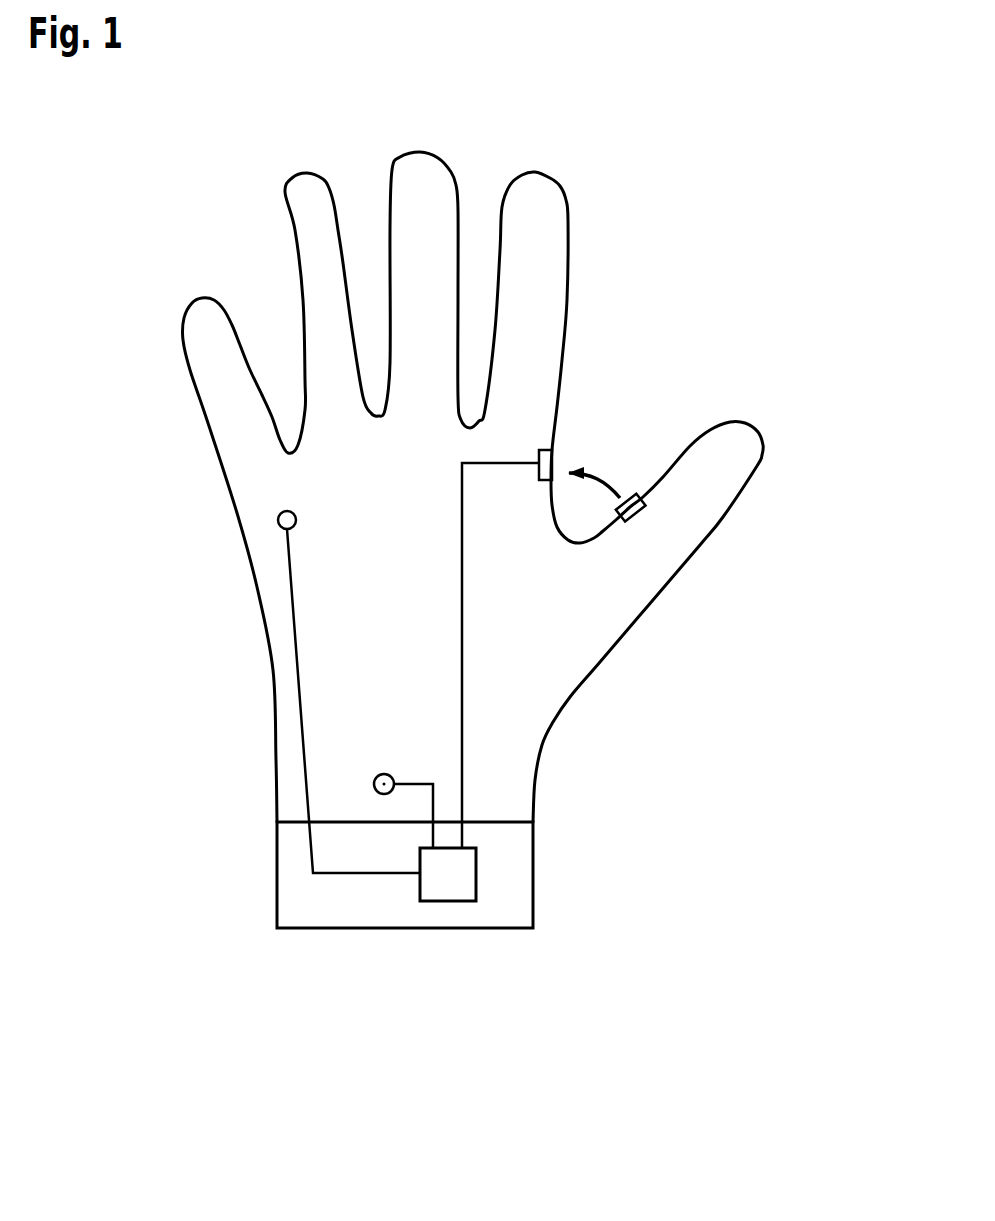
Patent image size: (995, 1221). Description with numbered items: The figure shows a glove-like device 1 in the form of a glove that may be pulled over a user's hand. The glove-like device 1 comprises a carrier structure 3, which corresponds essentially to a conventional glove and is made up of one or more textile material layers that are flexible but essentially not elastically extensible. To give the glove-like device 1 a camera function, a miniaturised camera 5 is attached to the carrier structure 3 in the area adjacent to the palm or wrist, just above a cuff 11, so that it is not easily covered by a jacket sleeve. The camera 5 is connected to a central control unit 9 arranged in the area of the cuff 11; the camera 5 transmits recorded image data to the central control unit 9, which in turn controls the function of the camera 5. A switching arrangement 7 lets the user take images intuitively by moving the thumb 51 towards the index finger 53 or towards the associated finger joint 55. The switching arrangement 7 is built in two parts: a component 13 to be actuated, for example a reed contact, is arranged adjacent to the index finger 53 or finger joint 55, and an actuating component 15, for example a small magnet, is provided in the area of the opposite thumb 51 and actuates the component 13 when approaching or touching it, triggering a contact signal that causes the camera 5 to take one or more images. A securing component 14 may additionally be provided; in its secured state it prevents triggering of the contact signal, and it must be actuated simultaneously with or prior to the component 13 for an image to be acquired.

The glove-like device 1 is at (753, 205).
The carrier structure 3 is at (567, 705).
The camera 5 is at (383, 763).
The switching arrangement 7 is at (558, 455).
The central control unit 9 is at (445, 902).
The cuff 11 is at (537, 872).
The component to be actuated 13 is at (547, 450).
The securing component 14 is at (278, 520).
The actuating component 15 is at (645, 507).
The thumb 51 is at (761, 425).
The index finger 53 is at (594, 205).
The finger joint 55 is at (560, 503).